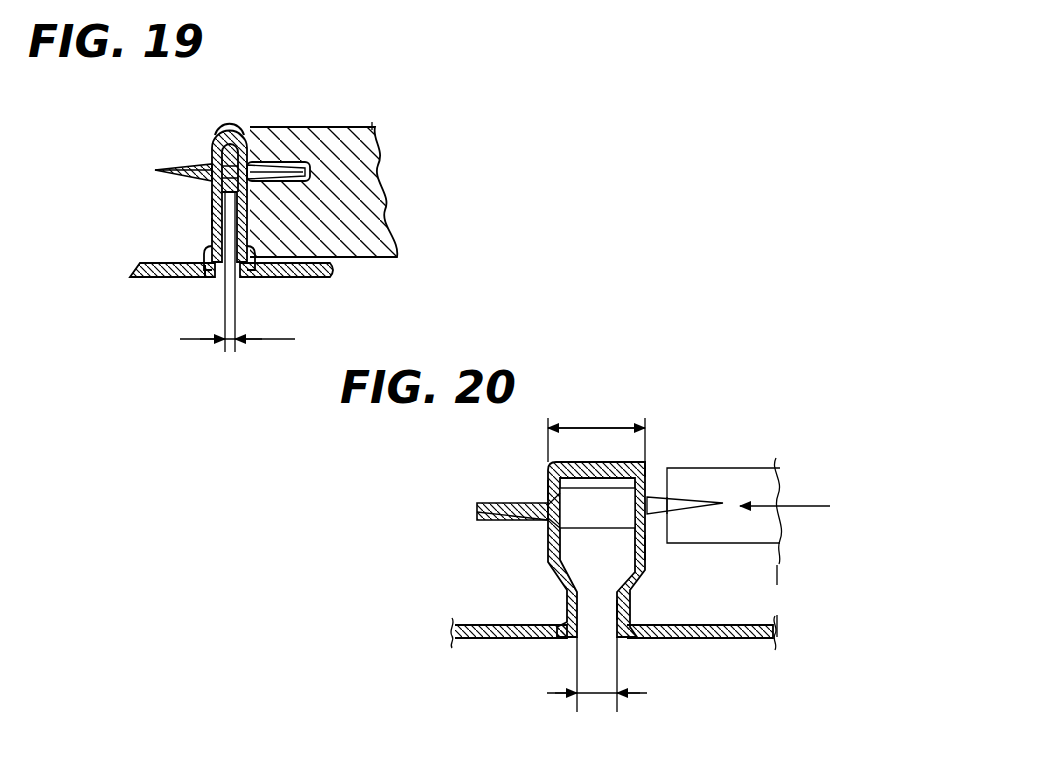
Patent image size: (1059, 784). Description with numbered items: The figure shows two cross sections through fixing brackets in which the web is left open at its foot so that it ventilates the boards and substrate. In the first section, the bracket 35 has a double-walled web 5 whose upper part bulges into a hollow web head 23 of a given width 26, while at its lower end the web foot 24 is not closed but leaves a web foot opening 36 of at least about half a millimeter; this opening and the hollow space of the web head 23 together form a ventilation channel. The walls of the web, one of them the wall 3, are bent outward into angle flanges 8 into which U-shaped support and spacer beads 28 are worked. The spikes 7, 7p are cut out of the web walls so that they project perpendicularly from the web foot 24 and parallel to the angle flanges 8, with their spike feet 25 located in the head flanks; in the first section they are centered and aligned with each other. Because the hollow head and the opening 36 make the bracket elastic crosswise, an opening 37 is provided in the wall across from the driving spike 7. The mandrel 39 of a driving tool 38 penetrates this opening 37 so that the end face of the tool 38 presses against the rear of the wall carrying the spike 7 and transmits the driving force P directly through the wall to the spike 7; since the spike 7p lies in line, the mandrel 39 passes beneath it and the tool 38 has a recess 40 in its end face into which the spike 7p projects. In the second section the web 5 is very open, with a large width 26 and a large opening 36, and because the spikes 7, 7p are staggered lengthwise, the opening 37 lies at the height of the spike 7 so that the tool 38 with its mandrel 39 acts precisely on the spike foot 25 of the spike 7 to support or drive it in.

In FIG. 19, the wall 3 is at (205, 283).
In FIG. 19, the web 5 is at (243, 128).
In FIG. 20, the web 5 is at (547, 561).
In FIG. 19, the driving spike 7 is at (195, 166).
In FIG. 20, the driving spike 7 is at (500, 504).
In FIG. 19, the spike 7p is at (266, 170).
In FIG. 20, the spike 7p is at (685, 500).
In FIG. 19, the angle flange 8 is at (145, 281).
In FIG. 20, the angle flange 8 is at (613, 633).
In FIG. 19, the hollow web head 23 is at (214, 134).
In FIG. 20, the hollow web head 23 is at (646, 466).
In FIG. 20, the web foot 24 is at (622, 608).
In FIG. 20, the spike foot 25 is at (546, 506).
In FIG. 20, the width of the web head 26 is at (604, 426).
In FIG. 19, the support and spacer bead 28 is at (163, 261).
In FIG. 19, the bracket 35 is at (295, 310).
In FIG. 19, the web foot opening 36 is at (232, 346).
In FIG. 20, the web foot opening 36 is at (597, 694).
In FIG. 19, the opening 37 is at (213, 224).
In FIG. 20, the opening 37 is at (650, 538).
In FIG. 19, the driving tool 38 is at (388, 177).
In FIG. 20, the driving tool 38 is at (772, 462).
In FIG. 19, the mandrel 39 is at (213, 208).
In FIG. 19, the recess 40 is at (320, 130).
In FIG. 20, the driving force P is at (785, 491).